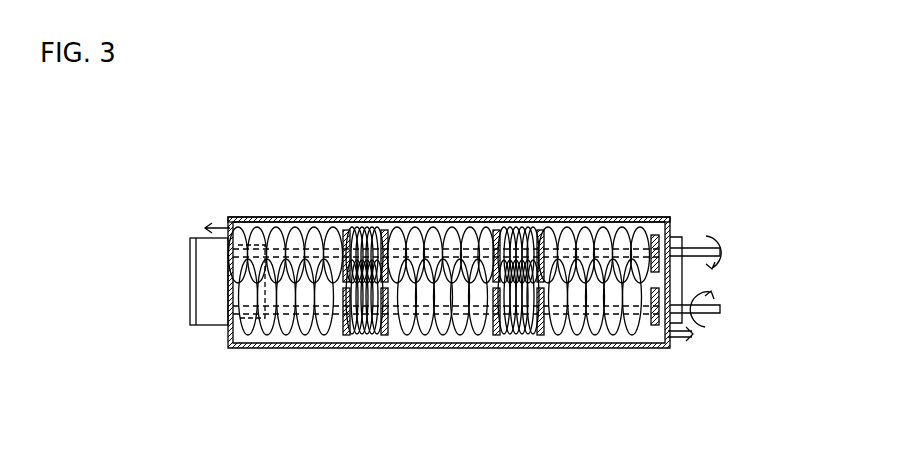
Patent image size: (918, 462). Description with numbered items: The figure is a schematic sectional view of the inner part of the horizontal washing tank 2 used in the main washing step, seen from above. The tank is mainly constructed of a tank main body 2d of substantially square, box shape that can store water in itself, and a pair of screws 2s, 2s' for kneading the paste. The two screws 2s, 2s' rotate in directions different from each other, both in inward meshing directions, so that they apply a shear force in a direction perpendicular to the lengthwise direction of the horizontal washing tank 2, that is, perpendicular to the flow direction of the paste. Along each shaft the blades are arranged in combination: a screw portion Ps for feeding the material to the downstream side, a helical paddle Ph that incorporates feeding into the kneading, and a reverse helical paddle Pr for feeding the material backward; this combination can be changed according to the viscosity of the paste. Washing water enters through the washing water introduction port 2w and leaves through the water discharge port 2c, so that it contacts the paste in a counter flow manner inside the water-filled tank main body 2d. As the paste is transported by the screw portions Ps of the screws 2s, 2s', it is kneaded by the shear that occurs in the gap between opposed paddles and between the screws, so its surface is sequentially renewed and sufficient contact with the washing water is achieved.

The horizontal washing tank 2 is at (449, 244).
The water discharge port 2c is at (218, 226).
The tank main body 2d is at (318, 217).
The screw 2s is at (440, 348).
The screw 2s' is at (439, 212).
The washing water introduction port 2w is at (681, 342).
The screw portion Ps is at (278, 334).
The reverse helical paddle Pr is at (357, 334).
The helical paddle Ph is at (386, 334).